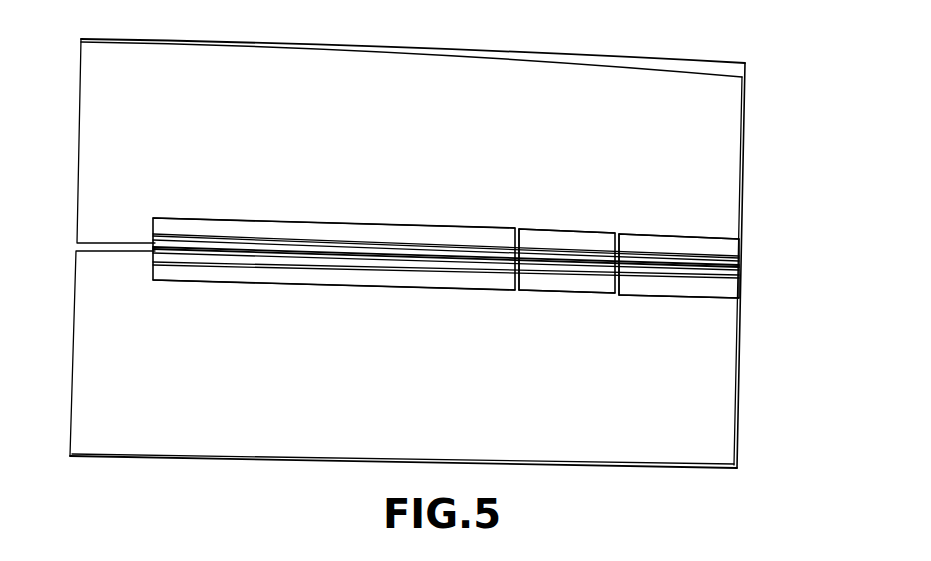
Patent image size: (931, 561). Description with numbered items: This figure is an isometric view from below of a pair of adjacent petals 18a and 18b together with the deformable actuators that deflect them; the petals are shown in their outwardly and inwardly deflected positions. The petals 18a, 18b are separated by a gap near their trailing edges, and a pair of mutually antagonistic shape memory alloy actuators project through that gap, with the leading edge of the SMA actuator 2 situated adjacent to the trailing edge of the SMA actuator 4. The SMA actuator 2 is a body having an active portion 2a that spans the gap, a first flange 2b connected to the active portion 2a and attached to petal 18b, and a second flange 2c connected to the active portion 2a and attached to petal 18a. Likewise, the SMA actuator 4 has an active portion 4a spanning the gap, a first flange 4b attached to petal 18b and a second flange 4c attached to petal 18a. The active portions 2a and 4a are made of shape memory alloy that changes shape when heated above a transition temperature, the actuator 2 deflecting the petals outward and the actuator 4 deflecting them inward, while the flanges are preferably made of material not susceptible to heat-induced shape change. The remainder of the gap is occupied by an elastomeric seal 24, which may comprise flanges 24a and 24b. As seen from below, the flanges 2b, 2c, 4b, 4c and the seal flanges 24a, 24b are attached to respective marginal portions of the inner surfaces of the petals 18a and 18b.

The SMA actuator 2 is at (700, 237).
The active portion 2a is at (660, 268).
The first flange 2b is at (700, 287).
The second flange 2c is at (655, 240).
The SMA actuator 4 is at (583, 290).
The active portion 4a is at (593, 242).
The first flange 4b is at (548, 278).
The second flange 4c is at (565, 240).
The petal 18a is at (565, 98).
The petal 18b is at (710, 420).
The elastomeric seal 24 is at (380, 224).
The flange 24a is at (438, 233).
The flange 24b is at (430, 278).